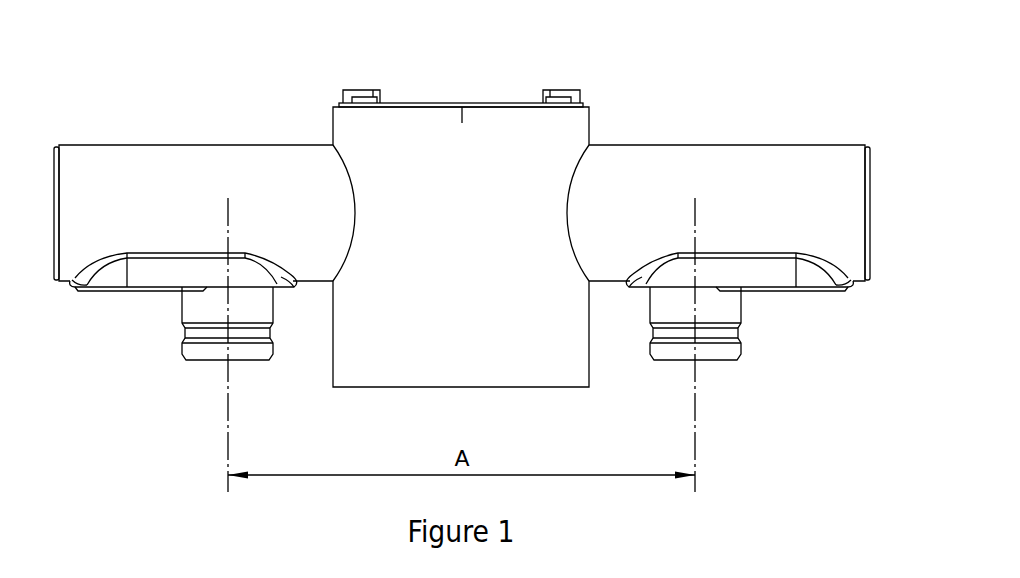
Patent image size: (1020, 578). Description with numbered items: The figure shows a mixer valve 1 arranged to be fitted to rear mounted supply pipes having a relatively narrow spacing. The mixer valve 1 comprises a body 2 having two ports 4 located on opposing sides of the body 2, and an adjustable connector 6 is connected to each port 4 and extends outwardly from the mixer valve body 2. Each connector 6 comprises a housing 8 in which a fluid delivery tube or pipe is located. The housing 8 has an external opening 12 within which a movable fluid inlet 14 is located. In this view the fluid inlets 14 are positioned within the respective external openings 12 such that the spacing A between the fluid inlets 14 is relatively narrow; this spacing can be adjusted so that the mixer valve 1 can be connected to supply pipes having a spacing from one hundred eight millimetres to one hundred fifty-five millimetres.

The mixer valve 1 is at (314, 66).
The body 2 is at (573, 128).
The port 4 is at (333, 147).
The adjustable connector 6 is at (99, 157).
The housing 8 is at (852, 286).
The external opening 12 is at (122, 291).
The movable fluid inlet 14 is at (719, 356).